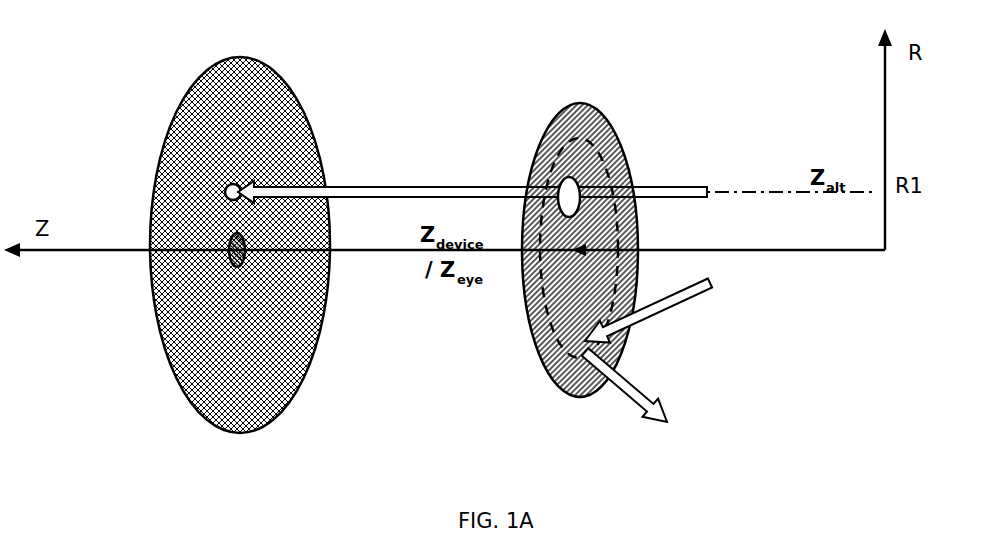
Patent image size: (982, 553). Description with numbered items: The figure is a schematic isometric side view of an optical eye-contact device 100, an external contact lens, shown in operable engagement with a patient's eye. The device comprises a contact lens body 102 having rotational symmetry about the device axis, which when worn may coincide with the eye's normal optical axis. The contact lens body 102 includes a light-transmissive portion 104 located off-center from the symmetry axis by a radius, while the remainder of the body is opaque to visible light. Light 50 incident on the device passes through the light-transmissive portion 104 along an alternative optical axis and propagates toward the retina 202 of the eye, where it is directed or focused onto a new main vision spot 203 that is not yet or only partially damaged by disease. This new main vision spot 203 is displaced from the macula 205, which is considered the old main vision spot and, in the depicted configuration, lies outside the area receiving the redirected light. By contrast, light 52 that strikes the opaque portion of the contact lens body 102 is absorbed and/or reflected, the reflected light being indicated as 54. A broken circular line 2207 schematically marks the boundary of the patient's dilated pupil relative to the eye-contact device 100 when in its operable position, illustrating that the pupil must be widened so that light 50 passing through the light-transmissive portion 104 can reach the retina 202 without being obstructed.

The optical eye-contact device 100 is at (606, 229).
The contact lens body 102 is at (610, 113).
The light-transmissive portion 104 is at (580, 180).
The broken circular line 2207 is at (547, 305).
The light 50 is at (380, 181).
The incident light 52 is at (670, 303).
The reflected light 54 is at (648, 385).
The retina 202 is at (190, 368).
The new main vision spot 203 is at (226, 187).
The macula 205 is at (230, 262).